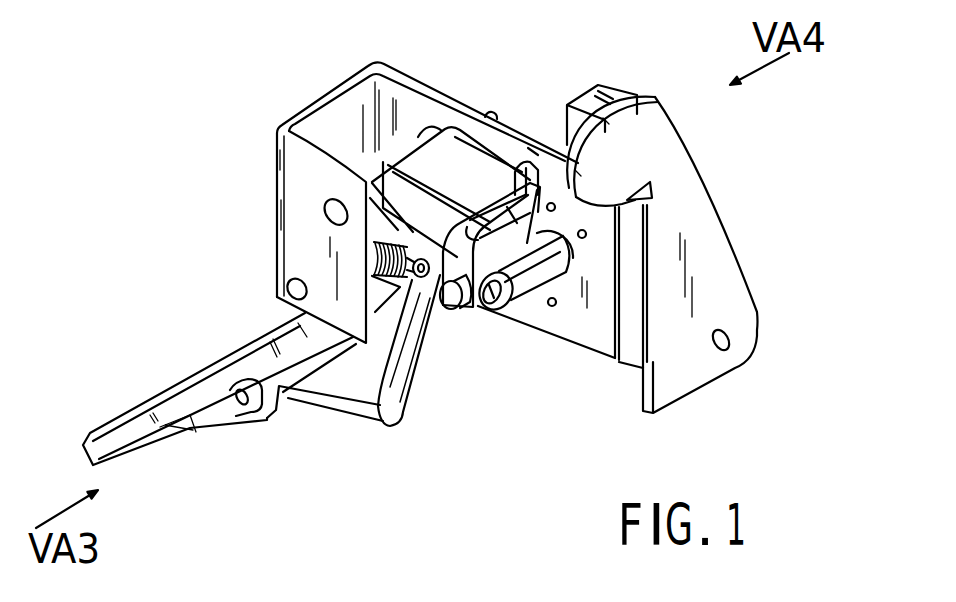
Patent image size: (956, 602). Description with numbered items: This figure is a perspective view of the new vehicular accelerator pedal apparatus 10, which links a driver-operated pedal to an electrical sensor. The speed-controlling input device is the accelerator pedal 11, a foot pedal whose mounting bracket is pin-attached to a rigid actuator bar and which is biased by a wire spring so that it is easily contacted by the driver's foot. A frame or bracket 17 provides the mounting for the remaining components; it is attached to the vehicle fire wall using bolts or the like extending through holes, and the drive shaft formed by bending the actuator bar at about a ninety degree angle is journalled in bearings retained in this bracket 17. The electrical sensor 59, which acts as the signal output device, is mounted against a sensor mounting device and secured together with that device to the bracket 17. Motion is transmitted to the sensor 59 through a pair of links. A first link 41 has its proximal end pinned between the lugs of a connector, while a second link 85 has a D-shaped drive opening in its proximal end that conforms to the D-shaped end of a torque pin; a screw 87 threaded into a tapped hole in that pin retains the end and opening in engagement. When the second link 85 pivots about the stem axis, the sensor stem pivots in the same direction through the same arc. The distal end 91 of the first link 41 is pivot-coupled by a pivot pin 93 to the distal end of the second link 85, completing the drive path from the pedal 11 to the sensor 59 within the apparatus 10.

The vehicular accelerator pedal apparatus 10 is at (248, 143).
The accelerator pedal 11 is at (223, 358).
The bracket 17 is at (695, 200).
The first link 41 is at (413, 266).
The electrical sensor 59 is at (560, 150).
The second link 85 is at (494, 296).
The screw 87 is at (491, 306).
The distal end of the first link 91 is at (464, 311).
The pivot pin 93 is at (375, 408).